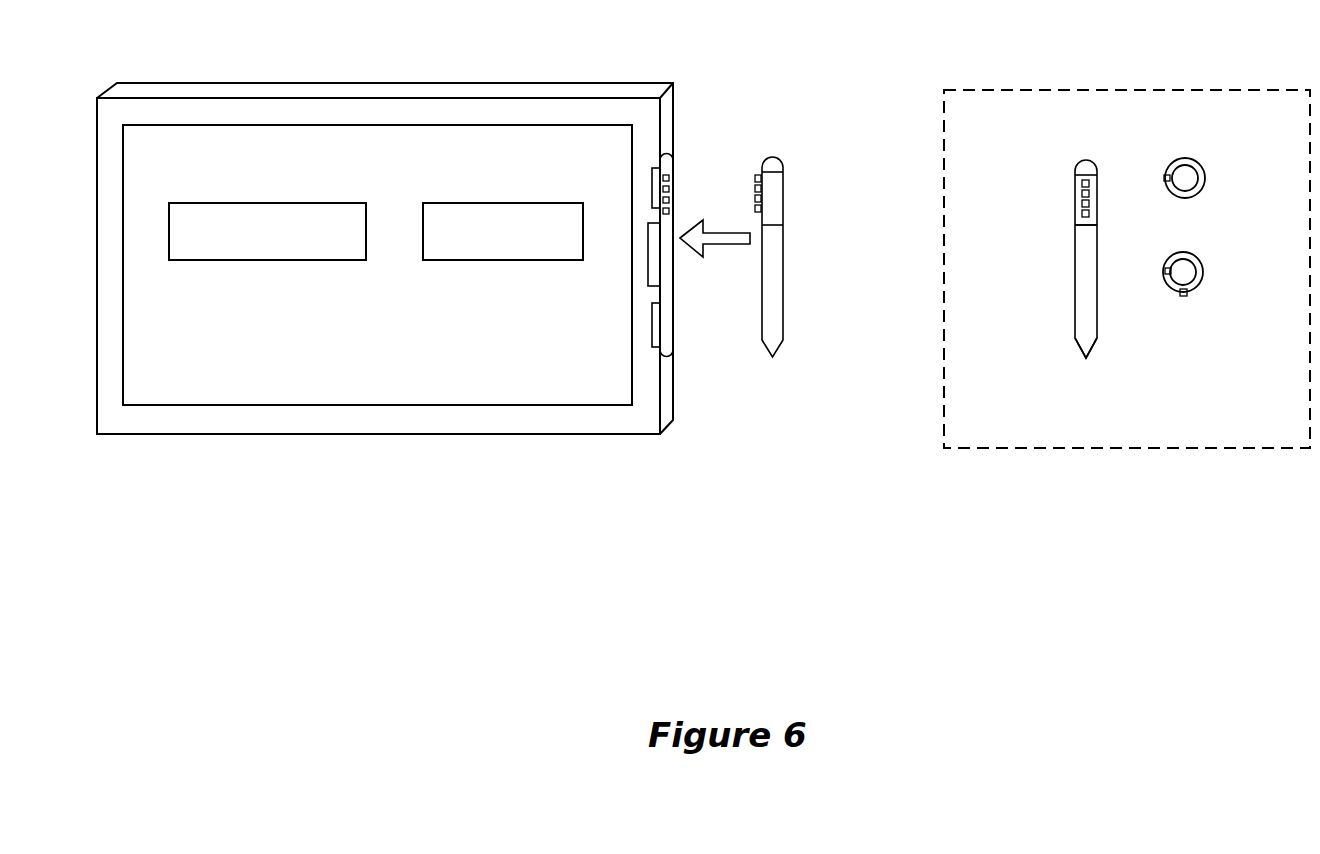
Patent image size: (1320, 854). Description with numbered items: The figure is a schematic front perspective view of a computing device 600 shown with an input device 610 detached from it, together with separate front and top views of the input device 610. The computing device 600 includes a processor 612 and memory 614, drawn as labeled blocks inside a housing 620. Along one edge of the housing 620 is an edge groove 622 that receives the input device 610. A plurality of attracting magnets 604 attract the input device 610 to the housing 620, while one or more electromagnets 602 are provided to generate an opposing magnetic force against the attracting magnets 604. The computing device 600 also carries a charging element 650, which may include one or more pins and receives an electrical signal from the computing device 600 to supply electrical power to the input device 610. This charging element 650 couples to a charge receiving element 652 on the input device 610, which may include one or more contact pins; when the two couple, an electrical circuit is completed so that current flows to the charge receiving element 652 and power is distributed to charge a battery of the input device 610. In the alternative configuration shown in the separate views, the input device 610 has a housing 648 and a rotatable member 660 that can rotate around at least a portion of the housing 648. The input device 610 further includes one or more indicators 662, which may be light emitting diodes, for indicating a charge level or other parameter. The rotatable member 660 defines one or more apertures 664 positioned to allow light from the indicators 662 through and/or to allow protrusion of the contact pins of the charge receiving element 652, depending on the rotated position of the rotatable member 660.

The computing device 600 is at (238, 52).
The electromagnets 602 is at (648, 259).
The attracting magnets 604 is at (652, 195).
The input device 610 is at (773, 160).
The processor 612 is at (276, 203).
The memory 614 is at (494, 203).
The housing 620 is at (478, 91).
The edge groove 622 is at (665, 328).
The housing 648 is at (1080, 315).
The charging element 650 is at (667, 203).
The charge receiving element 652 is at (758, 172).
The rotatable member 660 is at (1078, 218).
The indicators 662 is at (1083, 185).
The apertures 664 is at (1160, 190).